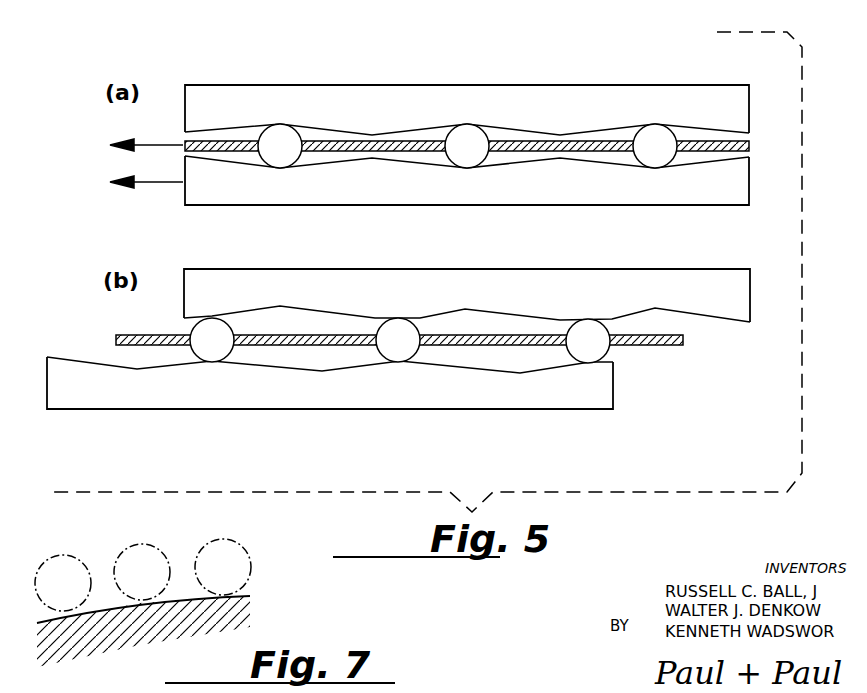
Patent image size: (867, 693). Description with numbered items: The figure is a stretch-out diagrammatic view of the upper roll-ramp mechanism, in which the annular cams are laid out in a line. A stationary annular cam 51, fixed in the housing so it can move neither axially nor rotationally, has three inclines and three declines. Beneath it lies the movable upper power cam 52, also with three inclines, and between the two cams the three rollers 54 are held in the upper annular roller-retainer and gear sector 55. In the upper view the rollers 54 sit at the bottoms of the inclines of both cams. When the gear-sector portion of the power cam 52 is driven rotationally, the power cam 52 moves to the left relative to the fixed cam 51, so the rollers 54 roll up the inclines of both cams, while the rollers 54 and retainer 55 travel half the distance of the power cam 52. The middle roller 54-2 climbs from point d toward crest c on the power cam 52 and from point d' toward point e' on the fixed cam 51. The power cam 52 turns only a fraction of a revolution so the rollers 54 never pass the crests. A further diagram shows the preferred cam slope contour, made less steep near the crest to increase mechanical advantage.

The stationary annular cam 51 is at (466, 90).
The upper power cam 52 is at (525, 192).
The rollers 54 is at (268, 138).
The middle roller 54-2 is at (475, 137).
The upper annular roller-retainer and gear sector 55 is at (752, 148).